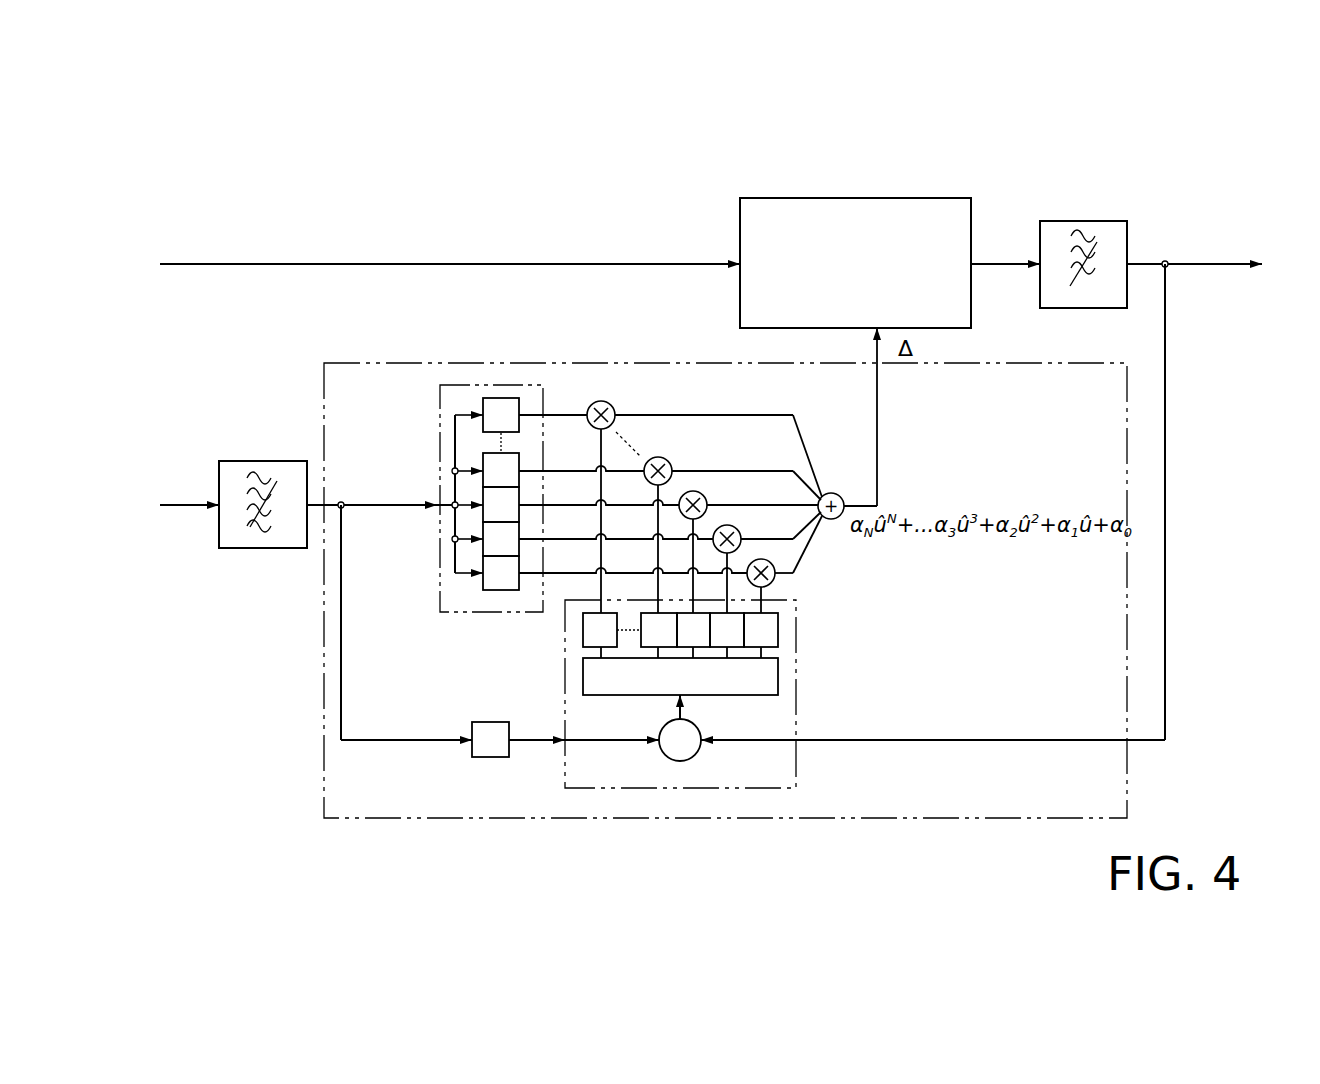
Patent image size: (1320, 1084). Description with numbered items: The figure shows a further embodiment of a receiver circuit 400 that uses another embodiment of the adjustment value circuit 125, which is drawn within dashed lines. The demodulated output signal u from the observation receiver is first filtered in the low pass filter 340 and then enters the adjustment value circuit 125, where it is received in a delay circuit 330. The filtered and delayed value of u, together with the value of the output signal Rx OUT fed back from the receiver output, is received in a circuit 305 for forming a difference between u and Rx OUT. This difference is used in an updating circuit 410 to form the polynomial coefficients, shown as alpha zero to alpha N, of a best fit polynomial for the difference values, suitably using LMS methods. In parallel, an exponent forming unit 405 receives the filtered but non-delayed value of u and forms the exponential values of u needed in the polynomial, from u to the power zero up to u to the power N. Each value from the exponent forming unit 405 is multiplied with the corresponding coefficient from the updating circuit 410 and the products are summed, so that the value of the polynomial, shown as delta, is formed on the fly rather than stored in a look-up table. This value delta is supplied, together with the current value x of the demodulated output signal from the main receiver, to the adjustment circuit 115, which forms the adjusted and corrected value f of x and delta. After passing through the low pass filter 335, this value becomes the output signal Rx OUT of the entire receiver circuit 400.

The receiver circuit 400 is at (404, 163).
The adjustment circuit 115 is at (855, 198).
The low pass filter 335 is at (1082, 221).
The low pass filter 340 is at (258, 461).
The adjustment value circuit 125 is at (857, 820).
The exponent forming unit 405 is at (490, 383).
The updating circuit 410 is at (745, 695).
The circuit for forming a difference 305 is at (668, 758).
The delay circuit 330 is at (488, 757).